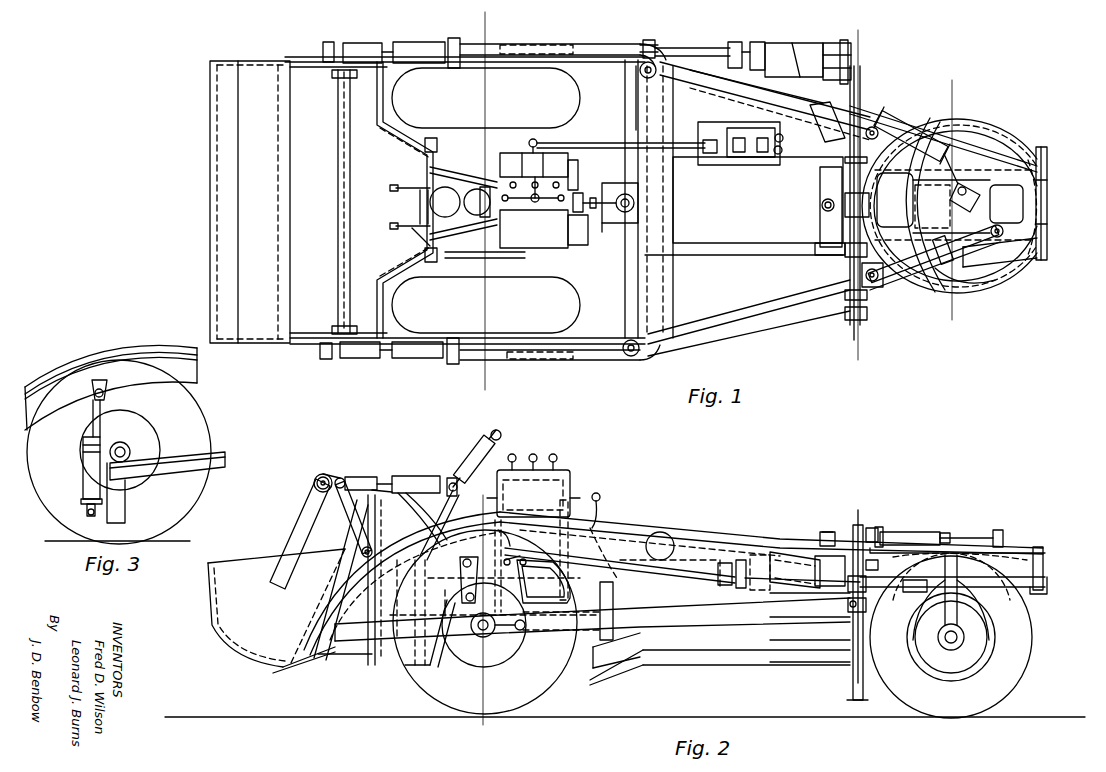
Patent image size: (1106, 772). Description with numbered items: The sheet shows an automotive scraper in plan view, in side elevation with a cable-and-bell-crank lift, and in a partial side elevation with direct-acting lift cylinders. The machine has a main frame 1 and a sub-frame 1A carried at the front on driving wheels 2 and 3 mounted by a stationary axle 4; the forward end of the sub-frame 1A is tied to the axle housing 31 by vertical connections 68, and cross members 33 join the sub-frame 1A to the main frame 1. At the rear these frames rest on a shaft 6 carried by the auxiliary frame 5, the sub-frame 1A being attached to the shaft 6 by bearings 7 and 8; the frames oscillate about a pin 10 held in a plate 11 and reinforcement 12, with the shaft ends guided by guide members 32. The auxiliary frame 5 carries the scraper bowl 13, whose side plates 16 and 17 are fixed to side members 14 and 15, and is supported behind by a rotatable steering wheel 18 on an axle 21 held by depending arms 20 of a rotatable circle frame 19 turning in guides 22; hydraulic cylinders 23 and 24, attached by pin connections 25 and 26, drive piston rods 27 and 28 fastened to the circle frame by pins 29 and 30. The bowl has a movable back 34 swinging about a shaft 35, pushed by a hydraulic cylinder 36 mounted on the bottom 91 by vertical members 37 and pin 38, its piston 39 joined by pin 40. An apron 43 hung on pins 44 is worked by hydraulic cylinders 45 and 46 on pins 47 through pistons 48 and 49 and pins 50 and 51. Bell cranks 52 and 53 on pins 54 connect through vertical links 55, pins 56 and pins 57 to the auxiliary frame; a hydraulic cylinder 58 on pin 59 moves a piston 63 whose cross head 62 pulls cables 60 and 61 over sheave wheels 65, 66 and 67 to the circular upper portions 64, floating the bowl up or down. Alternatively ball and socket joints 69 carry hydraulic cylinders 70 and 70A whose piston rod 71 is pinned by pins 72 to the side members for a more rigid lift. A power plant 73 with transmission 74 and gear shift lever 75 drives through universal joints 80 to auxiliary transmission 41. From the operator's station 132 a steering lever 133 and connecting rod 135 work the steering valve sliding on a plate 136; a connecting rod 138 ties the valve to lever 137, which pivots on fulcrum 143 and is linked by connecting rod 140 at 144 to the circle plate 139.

In FIG. 1, the main frame 1 is at (778, 322).
In FIG. 2, the main frame 1 is at (748, 652).
In FIG. 3, the main frame 1 is at (218, 470).
In FIG. 1, the sub-frame 1A is at (776, 250).
In FIG. 2, the sub-frame 1A is at (680, 656).
In FIG. 1, the front driving wheel 2 is at (486, 305).
In FIG. 3, the front driving wheel 2 is at (200, 418).
In FIG. 1, the front driving wheel 3 is at (486, 98).
In FIG. 3, the front driving wheel 3 is at (157, 447).
In FIG. 2, the stationary axle 4 is at (535, 690).
In FIG. 3, the stationary axle 4 is at (128, 452).
In FIG. 2, the auxiliary frame 5 is at (690, 532).
In FIG. 3, the auxiliary frame 5 is at (68, 362).
In FIG. 1, the shaft 6 is at (852, 320).
In FIG. 2, the shaft 6 is at (864, 612).
In FIG. 1, the bearing 7 is at (835, 258).
In FIG. 2, the bearing 7 is at (820, 640).
In FIG. 1, the bearing 8 is at (818, 170).
In FIG. 2, the bearing 8 is at (812, 650).
In FIG. 1, the pin 10 is at (824, 210).
In FIG. 2, the pin 10 is at (858, 510).
In FIG. 1, the plate 11 is at (850, 270).
In FIG. 2, the reinforcement 12 is at (862, 530).
In FIG. 2, the scraper bowl 13 is at (336, 652).
In FIG. 1, the side member 14 is at (756, 308).
In FIG. 2, the side member 14 is at (632, 528).
In FIG. 3, the side member 14 is at (73, 367).
In FIG. 1, the side member 15 is at (760, 94).
In FIG. 2, the side member 15 is at (655, 537).
In FIG. 3, the side member 15 is at (111, 356).
In FIG. 1, the side plate 16 is at (332, 330).
In FIG. 2, the side plate 16 is at (328, 540).
In FIG. 1, the side plate 17 is at (335, 72).
In FIG. 2, the side plate 17 is at (296, 512).
In FIG. 1, the rotatable steering wheel 18 is at (949, 206).
In FIG. 2, the rotatable steering wheel 18 is at (990, 695).
In FIG. 1, the rotatable circle frame 19 is at (1000, 270).
In FIG. 2, the rotatable circle frame 19 is at (1030, 596).
In FIG. 1, the depending arm 20 is at (955, 205).
In FIG. 2, the depending arm 20 is at (975, 622).
In FIG. 2, the axle 21 is at (960, 640).
In FIG. 1, the guide 22 is at (918, 132).
In FIG. 2, the guide 22 is at (908, 590).
In FIG. 1, the hydraulic cylinder 23 is at (928, 240).
In FIG. 1, the hydraulic cylinder 24 is at (928, 128).
In FIG. 1, the pin connection 25 is at (876, 290).
In FIG. 1, the pin connection 26 is at (876, 124).
In FIG. 1, the piston rod 27 is at (968, 285).
In FIG. 1, the piston rod 28 is at (975, 143).
In FIG. 1, the pin 29 is at (1005, 232).
In FIG. 1, the pin 30 is at (1047, 174).
In FIG. 1, the axle housing 31 is at (530, 258).
In FIG. 2, the guide member 32 is at (858, 680).
In FIG. 1, the cross member 33 is at (625, 108).
In FIG. 2, the cross member 33 is at (633, 660).
In FIG. 1, the movable back 34 is at (403, 258).
In FIG. 2, the shaft 35 is at (346, 478).
In FIG. 1, the hydraulic cylinder 36 is at (460, 202).
In FIG. 2, the hydraulic cylinder 36 is at (472, 458).
In FIG. 1, the vertical member 37 is at (430, 185).
In FIG. 2, the vertical member 37 is at (504, 462).
In FIG. 1, the pin 38 is at (412, 245).
In FIG. 2, the pin 38 is at (498, 440).
In FIG. 1, the piston 39 is at (398, 212).
In FIG. 2, the piston 39 is at (420, 492).
In FIG. 1, the pin 40 is at (398, 188).
In FIG. 2, the pin 40 is at (412, 560).
In FIG. 2, the auxiliary transmission 41 is at (385, 580).
In FIG. 1, the apron 43 is at (212, 228).
In FIG. 2, the apron 43 is at (212, 596).
In FIG. 2, the pin 44 is at (362, 556).
In FIG. 1, the hydraulic cylinder 45 is at (410, 358).
In FIG. 2, the hydraulic cylinder 45 is at (394, 476).
In FIG. 1, the hydraulic cylinder 46 is at (418, 42).
In FIG. 2, the hydraulic cylinder 46 is at (412, 478).
In FIG. 1, the pin 47 is at (455, 40).
In FIG. 2, the pin 47 is at (446, 478).
In FIG. 1, the piston 48 is at (360, 358).
In FIG. 2, the piston 48 is at (378, 475).
In FIG. 1, the piston 49 is at (368, 46).
In FIG. 2, the piston 49 is at (372, 477).
In FIG. 1, the pin 50 is at (326, 356).
In FIG. 2, the pin 50 is at (326, 474).
In FIG. 1, the pin 51 is at (328, 44).
In FIG. 2, the pin 51 is at (318, 466).
In FIG. 1, the bell crank 52 is at (514, 358).
In FIG. 2, the bell crank 52 is at (487, 636).
In FIG. 1, the bell crank 53 is at (520, 44).
In FIG. 2, the bell crank 53 is at (476, 642).
In FIG. 2, the pin 54 is at (525, 630).
In FIG. 2, the vertical link 55 is at (410, 655).
In FIG. 2, the pin 56 is at (508, 550).
In FIG. 2, the pin 57 is at (440, 660).
In FIG. 1, the hydraulic cylinder 58 is at (790, 52).
In FIG. 2, the hydraulic cylinder 58 is at (770, 560).
In FIG. 1, the pin 59 is at (836, 48).
In FIG. 2, the pin 59 is at (840, 542).
In FIG. 1, the cable 60 is at (692, 47).
In FIG. 2, the cable 60 is at (588, 575).
In FIG. 1, the cable 61 is at (640, 118).
In FIG. 1, the cross head 62 is at (735, 42).
In FIG. 2, the cross head 62 is at (724, 565).
In FIG. 1, the piston 63 is at (757, 42).
In FIG. 2, the piston 63 is at (740, 560).
In FIG. 2, the upper portion 64 is at (415, 700).
In FIG. 1, the sheave wheel 65 is at (636, 356).
In FIG. 1, the sheave wheel 66 is at (640, 72).
In FIG. 1, the sheave wheel 67 is at (666, 50).
In FIG. 1, the vertical connection 68 is at (432, 140).
In FIG. 2, the vertical connection 68 is at (455, 600).
In FIG. 3, the ball and socket joint 69 is at (88, 512).
In FIG. 3, the hydraulic cylinder 70 is at (92, 487).
In FIG. 3, the hydraulic cylinder 70A is at (88, 500).
In FIG. 3, the piston rod 71 is at (102, 408).
In FIG. 3, the pin 72 is at (105, 380).
In FIG. 1, the power plant 73 is at (758, 206).
In FIG. 2, the power plant 73 is at (718, 660).
In FIG. 1, the transmission 74 is at (618, 192).
In FIG. 1, the gear shift lever 75 is at (610, 216).
In FIG. 2, the gear shift lever 75 is at (600, 496).
In FIG. 1, the universal joint 80 is at (594, 192).
In FIG. 2, the bottom 91 is at (368, 665).
In FIG. 1, the operator's station 132 is at (566, 245).
In FIG. 1, the steering lever 133 is at (532, 200).
In FIG. 1, the connecting rod 135 is at (600, 142).
In FIG. 1, the plate 136 is at (783, 130).
In FIG. 1, the lever 137 is at (806, 112).
In FIG. 1, the connecting rod 138 is at (781, 144).
In FIG. 1, the circle plate 139 is at (727, 128).
In FIG. 1, the connecting rod 140 is at (932, 206).
In FIG. 1, the fulcrum 143 is at (830, 118).
In FIG. 1, the connection point 144 is at (964, 205).